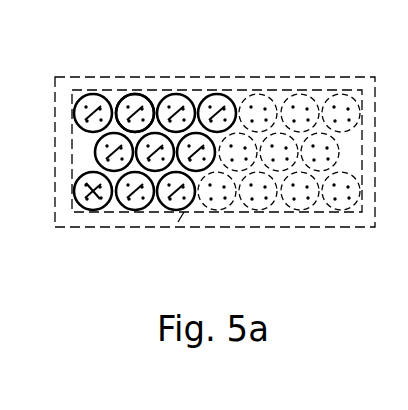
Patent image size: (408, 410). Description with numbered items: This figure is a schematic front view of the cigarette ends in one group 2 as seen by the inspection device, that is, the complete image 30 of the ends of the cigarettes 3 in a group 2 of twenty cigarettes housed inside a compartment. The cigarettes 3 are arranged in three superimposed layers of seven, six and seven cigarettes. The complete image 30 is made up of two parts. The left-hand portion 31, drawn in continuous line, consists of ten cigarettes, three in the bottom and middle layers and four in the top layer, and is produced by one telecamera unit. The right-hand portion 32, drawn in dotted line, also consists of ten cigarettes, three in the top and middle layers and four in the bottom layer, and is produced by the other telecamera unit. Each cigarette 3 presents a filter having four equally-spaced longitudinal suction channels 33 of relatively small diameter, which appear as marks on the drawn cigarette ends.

The group of cigarettes 2 is at (153, 92).
The cigarette 3 is at (128, 149).
The complete image 30 is at (319, 77).
The left-hand portion 31 is at (197, 90).
The right-hand portion 32 is at (277, 90).
The longitudinal suction channels 33 is at (90, 185).